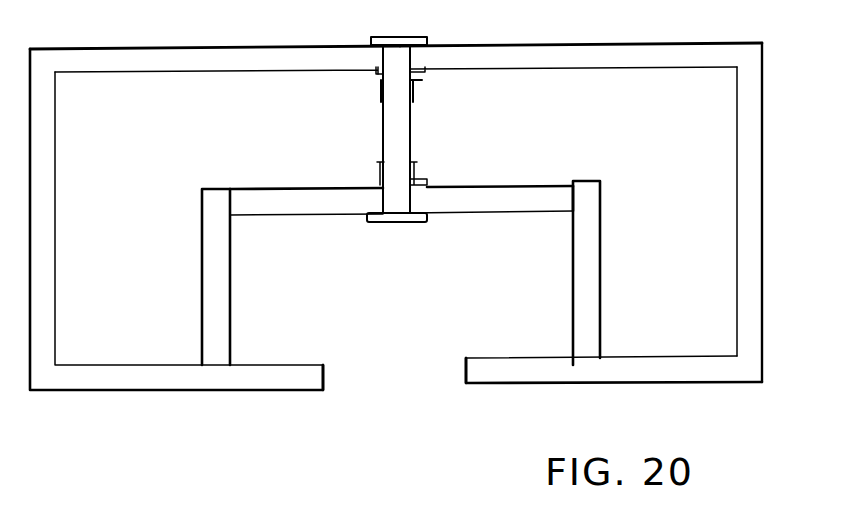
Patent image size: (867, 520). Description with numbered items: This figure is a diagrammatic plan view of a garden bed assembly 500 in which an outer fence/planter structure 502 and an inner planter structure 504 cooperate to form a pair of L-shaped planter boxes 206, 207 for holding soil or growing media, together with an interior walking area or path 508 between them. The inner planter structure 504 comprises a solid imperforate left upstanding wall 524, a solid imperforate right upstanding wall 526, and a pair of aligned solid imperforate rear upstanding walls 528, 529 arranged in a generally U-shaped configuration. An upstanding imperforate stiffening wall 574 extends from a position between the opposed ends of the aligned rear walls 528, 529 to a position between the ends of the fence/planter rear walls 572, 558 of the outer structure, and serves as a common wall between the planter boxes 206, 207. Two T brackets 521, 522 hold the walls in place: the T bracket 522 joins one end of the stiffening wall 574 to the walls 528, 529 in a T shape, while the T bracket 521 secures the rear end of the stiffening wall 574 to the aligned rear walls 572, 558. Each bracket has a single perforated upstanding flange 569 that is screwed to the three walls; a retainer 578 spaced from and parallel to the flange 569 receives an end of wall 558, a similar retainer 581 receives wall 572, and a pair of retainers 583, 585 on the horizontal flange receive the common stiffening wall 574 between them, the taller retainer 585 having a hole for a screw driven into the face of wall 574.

The garden bed assembly 500 is at (460, 400).
The outer fence/planter structure 502 is at (146, 397).
The inner planter structure 504 is at (326, 238).
The interior walking area or path 508 is at (436, 307).
The T bracket 521 is at (362, 83).
The T bracket 522 is at (360, 172).
The left upstanding wall 524 is at (208, 275).
The right upstanding wall 526 is at (746, 152).
The rear upstanding wall 528 is at (300, 188).
The rear upstanding wall 529 is at (484, 186).
The fence/planter rear wall 558 is at (645, 43).
The upstanding flange 569 is at (374, 37).
The fence/planter rear wall 572 is at (334, 46).
The stiffening wall 574 is at (402, 133).
The upstanding flange or retainer 578 is at (427, 70).
The upstanding flange or retainer 581 is at (292, 70).
The upstanding flange or retainer 583 is at (415, 100).
The upstanding flange or retainer 585 is at (380, 102).
The L-shaped planter box 206 is at (240, 303).
The L-shaped planter box 207 is at (562, 326).